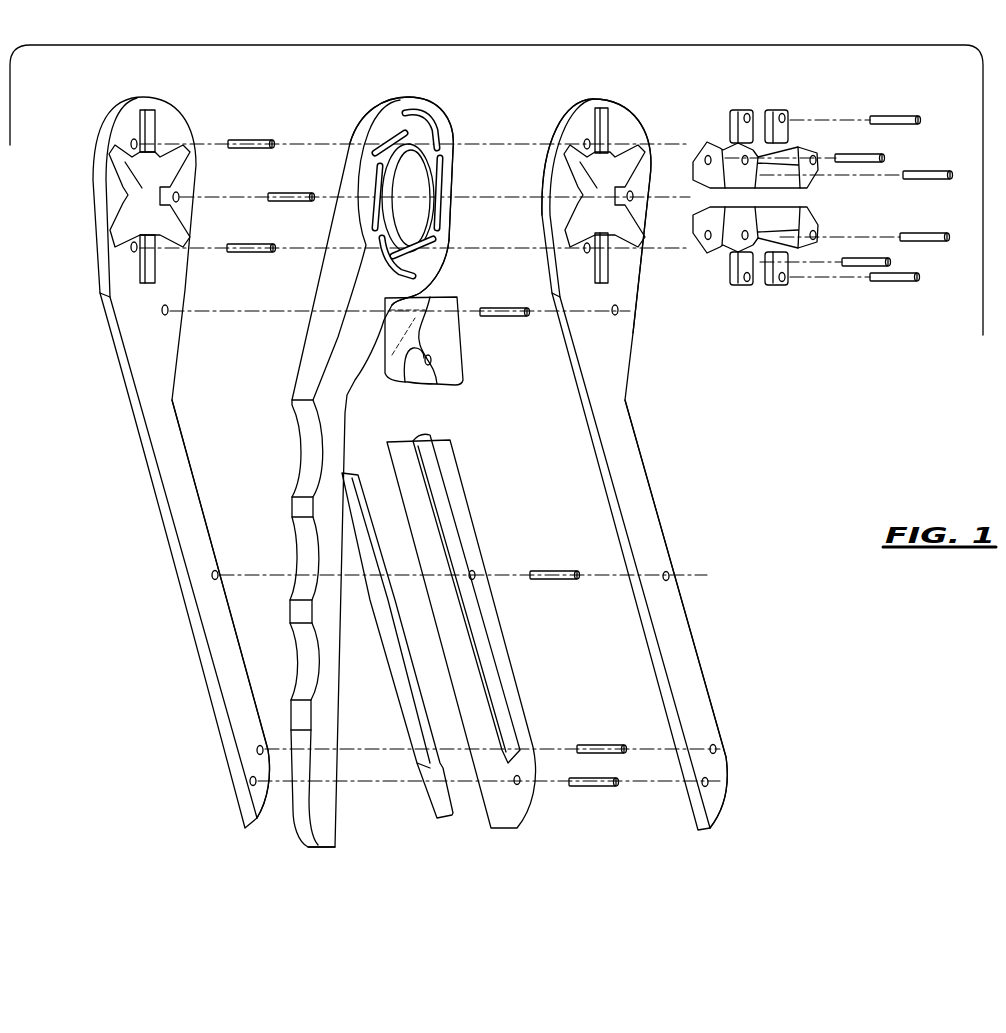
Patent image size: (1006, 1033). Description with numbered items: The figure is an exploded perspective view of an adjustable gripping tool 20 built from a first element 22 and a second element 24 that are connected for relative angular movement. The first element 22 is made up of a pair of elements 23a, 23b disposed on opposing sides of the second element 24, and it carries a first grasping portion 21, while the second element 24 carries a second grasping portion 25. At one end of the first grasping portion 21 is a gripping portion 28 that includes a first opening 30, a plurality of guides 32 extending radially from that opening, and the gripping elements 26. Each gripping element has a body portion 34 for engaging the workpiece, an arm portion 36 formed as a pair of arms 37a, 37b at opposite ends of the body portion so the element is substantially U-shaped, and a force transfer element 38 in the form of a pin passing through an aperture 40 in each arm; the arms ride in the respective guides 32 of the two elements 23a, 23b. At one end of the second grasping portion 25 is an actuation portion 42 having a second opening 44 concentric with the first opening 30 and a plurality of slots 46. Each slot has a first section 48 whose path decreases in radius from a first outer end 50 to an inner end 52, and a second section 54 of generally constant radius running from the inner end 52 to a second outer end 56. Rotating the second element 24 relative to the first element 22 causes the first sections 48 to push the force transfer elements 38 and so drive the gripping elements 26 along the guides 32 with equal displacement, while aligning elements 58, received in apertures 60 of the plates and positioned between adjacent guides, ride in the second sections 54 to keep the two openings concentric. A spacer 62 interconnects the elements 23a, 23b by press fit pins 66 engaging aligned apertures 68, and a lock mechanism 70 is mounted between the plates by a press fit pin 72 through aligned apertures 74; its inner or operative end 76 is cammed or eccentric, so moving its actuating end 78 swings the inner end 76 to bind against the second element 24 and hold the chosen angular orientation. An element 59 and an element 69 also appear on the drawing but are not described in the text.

The adjustable gripping tool 20 is at (442, 45).
The first grasping portion 21 is at (170, 492).
The first element 22 is at (188, 692).
The element of the first element 23a is at (712, 712).
The element of the first element 23b is at (178, 598).
The second element 24 is at (303, 846).
The second grasping portion 25 is at (320, 722).
The gripping elements 26 is at (795, 194).
The gripping portion 28 is at (576, 92).
The first opening 30 is at (115, 152).
The guides 32 is at (110, 222).
The body portion 34 is at (785, 212).
The arm portion 36 is at (780, 98).
The arm 37a is at (787, 118).
The arm 37b is at (738, 110).
The force transfer element 38 is at (913, 175).
The aperture 40 is at (790, 120).
The actuation portion 42 is at (348, 98).
The second opening 44 is at (436, 135).
The slots 46 is at (388, 125).
The first section 48 is at (375, 142).
The first outer end 50 is at (418, 105).
The inner end 52 is at (428, 115).
The second section 54 is at (372, 236).
The second outer end 56 is at (383, 218).
The aligning elements 58 is at (255, 142).
The hook 59 is at (447, 260).
The apertures 60 is at (130, 252).
The spacer 62 is at (466, 500).
The press fit pins 66 is at (390, 668).
The aligned apertures 68 is at (215, 572).
The rib 69 is at (437, 470).
The lock mechanism 70 is at (476, 380).
The press fit pin 72 is at (488, 308).
The aligned apertures 74 is at (168, 313).
The inner or operative end 76 is at (403, 370).
The actuating end 78 is at (455, 340).